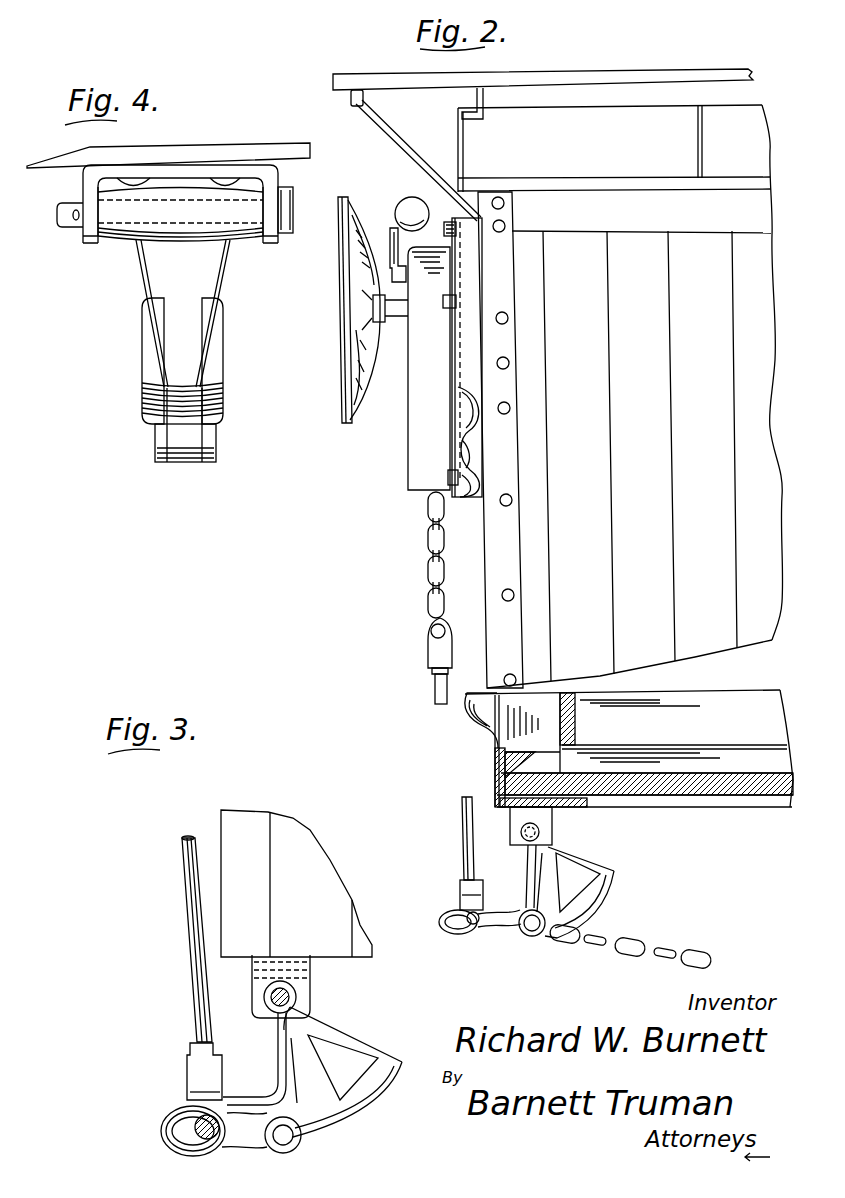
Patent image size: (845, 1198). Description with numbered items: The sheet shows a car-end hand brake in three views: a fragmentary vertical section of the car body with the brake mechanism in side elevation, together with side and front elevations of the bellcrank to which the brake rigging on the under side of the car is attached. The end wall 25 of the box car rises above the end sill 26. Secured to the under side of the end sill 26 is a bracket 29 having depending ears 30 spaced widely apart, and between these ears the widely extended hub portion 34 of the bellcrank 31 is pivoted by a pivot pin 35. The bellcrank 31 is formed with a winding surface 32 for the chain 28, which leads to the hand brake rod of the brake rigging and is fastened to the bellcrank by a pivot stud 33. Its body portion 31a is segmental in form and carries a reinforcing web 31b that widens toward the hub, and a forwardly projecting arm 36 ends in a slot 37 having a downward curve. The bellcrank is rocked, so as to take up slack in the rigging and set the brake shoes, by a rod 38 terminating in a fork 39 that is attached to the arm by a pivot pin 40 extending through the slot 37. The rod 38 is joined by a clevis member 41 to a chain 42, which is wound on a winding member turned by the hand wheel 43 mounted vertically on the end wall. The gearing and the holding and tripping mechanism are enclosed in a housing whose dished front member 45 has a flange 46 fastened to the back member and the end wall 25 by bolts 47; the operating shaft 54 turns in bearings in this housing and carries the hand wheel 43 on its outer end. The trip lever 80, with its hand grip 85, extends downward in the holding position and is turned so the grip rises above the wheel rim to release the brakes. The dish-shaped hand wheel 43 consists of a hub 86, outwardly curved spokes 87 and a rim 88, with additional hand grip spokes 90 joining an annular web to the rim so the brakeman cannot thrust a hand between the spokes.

In FIG. 2, the end wall 25 is at (458, 713).
In FIG. 3, the end wall 25 is at (230, 810).
In FIG. 2, the end sill 26 is at (493, 763).
In FIG. 4, the end sill 26 is at (262, 145).
In FIG. 2, the chain 28 is at (703, 953).
In FIG. 2, the bracket 29 is at (552, 814).
In FIG. 4, the bracket 29 is at (83, 177).
In FIG. 2, the depending ears 30 is at (545, 835).
In FIG. 4, the depending ears 30 is at (87, 245).
In FIG. 3, the depending ears 30 is at (310, 980).
In FIG. 2, the bellcrank 31 is at (607, 873).
In FIG. 4, the bellcrank 31 is at (145, 324).
In FIG. 3, the bellcrank 31 is at (377, 1047).
In FIG. 2, the body portion 31a is at (580, 854).
In FIG. 3, the body portion 31a is at (285, 1040).
In FIG. 2, the reinforcing web 31b is at (525, 847).
In FIG. 4, the reinforcing web 31b is at (200, 260).
In FIG. 2, the winding surface 32 is at (610, 895).
In FIG. 4, the winding surface 32 is at (150, 373).
In FIG. 3, the winding surface 32 is at (392, 1091).
In FIG. 2, the pivot stud 33 is at (527, 932).
In FIG. 3, the pivot stud 33 is at (276, 1137).
In FIG. 2, the hub portion 34 is at (516, 845).
In FIG. 4, the hub portion 34 is at (135, 240).
In FIG. 3, the hub portion 34 is at (297, 995).
In FIG. 2, the pivot pin 35 is at (520, 832).
In FIG. 4, the pivot pin 35 is at (64, 222).
In FIG. 3, the pivot pin 35 is at (297, 1002).
In FIG. 2, the arm 36 is at (500, 925).
In FIG. 4, the arm 36 is at (158, 463).
In FIG. 3, the arm 36 is at (247, 1100).
In FIG. 2, the slot 37 is at (447, 918).
In FIG. 3, the slot 37 is at (162, 1127).
In FIG. 2, the rod 38 is at (437, 683).
In FIG. 3, the rod 38 is at (188, 838).
In FIG. 2, the fork 39 is at (460, 887).
In FIG. 3, the fork 39 is at (187, 1062).
In FIG. 2, the pivot pin 40 is at (498, 920).
In FIG. 3, the pivot pin 40 is at (176, 1112).
In FIG. 2, the clevis member 41 is at (428, 650).
In FIG. 2, the chain 42 is at (430, 585).
In FIG. 2, the hand wheel 43 is at (343, 422).
In FIG. 2, the front member 45 is at (404, 446).
In FIG. 2, the flange 46 is at (455, 440).
In FIG. 2, the bolts 47 is at (445, 303).
In FIG. 2, the operating shaft 54 is at (403, 320).
In FIG. 2, the lever 80 is at (393, 272).
In FIG. 2, the hand grip 85 is at (418, 199).
In FIG. 2, the hub 86 is at (378, 316).
In FIG. 2, the spokes 87 is at (358, 245).
In FIG. 2, the rim 88 is at (348, 212).
In FIG. 2, the hand grip spokes 90 is at (350, 261).